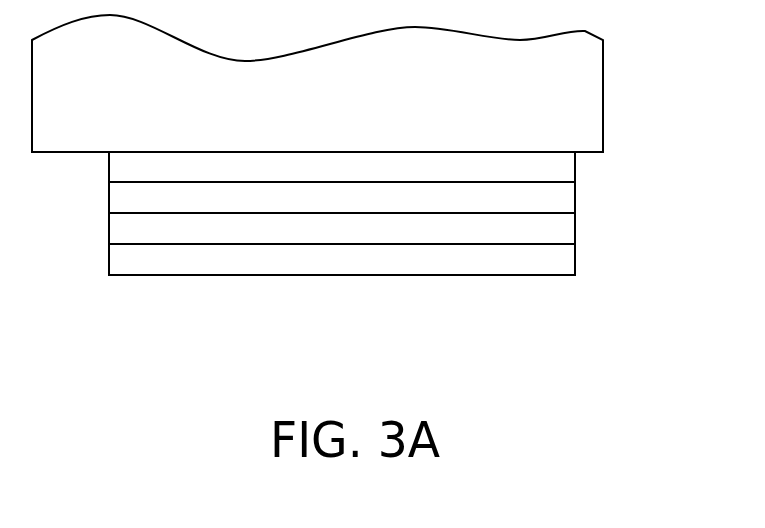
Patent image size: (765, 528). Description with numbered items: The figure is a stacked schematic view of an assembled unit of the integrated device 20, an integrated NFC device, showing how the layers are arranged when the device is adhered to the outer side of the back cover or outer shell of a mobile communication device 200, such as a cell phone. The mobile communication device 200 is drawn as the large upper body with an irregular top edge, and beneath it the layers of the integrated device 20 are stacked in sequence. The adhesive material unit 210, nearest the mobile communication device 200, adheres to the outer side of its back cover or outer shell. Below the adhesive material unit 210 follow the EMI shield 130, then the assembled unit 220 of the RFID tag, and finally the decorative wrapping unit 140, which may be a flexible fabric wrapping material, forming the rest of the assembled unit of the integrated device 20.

The mobile communication device 200 is at (550, 108).
The adhesive material unit 210 is at (555, 170).
The EMI shield 130 is at (553, 197).
The assembled unit of the RFID tag 220 is at (556, 231).
The decorative wrapping unit 140 is at (555, 263).
The integrated device 20 is at (675, 370).